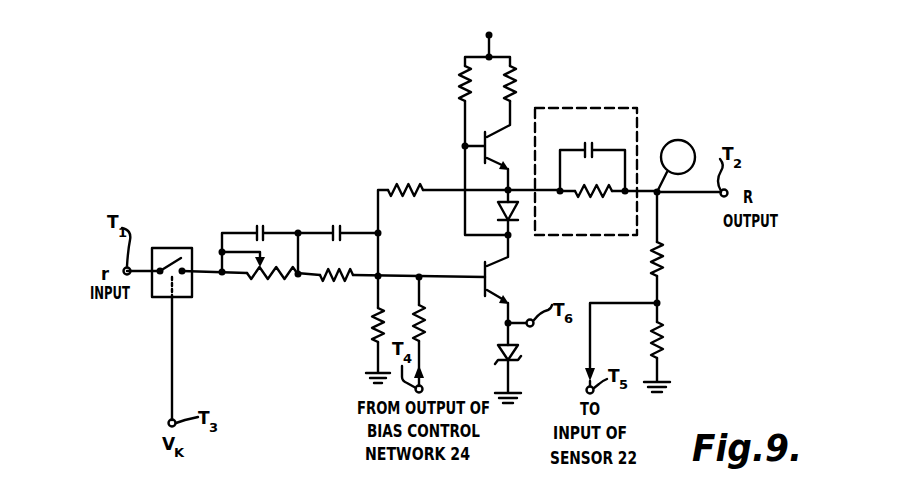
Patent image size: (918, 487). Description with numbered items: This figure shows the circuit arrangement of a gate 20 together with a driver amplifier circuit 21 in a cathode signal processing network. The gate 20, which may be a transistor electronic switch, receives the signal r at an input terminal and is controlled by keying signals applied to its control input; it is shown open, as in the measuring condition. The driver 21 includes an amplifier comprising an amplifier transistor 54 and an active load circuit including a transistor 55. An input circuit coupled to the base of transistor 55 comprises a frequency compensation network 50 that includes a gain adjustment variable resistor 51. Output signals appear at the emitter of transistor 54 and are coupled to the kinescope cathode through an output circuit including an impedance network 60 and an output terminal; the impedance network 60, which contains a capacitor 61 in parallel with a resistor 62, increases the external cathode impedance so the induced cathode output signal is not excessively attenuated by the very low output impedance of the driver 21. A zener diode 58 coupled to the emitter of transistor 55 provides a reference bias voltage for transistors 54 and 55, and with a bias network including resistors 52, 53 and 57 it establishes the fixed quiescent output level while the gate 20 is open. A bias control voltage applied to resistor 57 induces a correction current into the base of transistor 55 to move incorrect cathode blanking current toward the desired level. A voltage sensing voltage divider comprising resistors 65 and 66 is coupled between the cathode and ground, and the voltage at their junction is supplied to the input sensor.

The gate 20 is at (170, 248).
The driver amplifier circuit 21 is at (370, 157).
The frequency compensation network 50 is at (308, 211).
The gain adjustment variable resistor 51 is at (277, 313).
The resistor 52 is at (405, 188).
The resistor 53 is at (375, 324).
The amplifier transistor 54 is at (529, 156).
The transistor 55 is at (532, 290).
The resistor 57 is at (424, 343).
The zener diode 58 is at (518, 357).
The impedance network 60 is at (582, 108).
The capacitor 61 is at (593, 150).
The resistor 62 is at (590, 197).
The resistor 65 is at (663, 270).
The resistor 66 is at (663, 345).